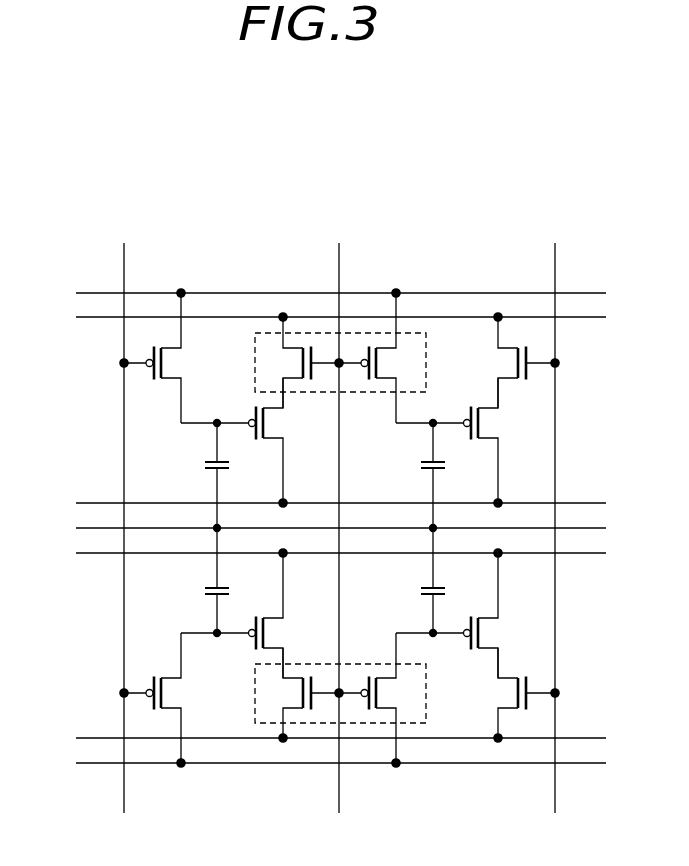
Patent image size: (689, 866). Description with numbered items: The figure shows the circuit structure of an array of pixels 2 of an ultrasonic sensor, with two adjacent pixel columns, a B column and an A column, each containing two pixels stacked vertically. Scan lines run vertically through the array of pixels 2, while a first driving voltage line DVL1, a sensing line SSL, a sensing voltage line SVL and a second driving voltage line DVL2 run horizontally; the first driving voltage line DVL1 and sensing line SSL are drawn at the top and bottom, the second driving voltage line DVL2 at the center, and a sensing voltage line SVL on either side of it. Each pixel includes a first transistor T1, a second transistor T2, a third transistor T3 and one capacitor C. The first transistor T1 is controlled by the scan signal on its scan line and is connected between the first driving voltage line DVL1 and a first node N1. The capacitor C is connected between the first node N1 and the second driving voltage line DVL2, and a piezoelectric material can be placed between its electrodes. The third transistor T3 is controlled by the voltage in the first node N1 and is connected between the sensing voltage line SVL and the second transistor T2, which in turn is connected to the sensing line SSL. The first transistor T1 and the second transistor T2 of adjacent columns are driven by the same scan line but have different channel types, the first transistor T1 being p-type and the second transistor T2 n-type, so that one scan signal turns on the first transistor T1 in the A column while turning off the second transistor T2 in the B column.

The array of pixels 2 is at (193, 160).
The first transistor T1 is at (268, 528).
The second transistor T2 is at (411, 528).
The third transistor T3 is at (386, 528).
The capacitor C is at (333, 528).
The first node N1 is at (322, 527).
The first driving voltage line DVL1 is at (86, 293).
The second driving voltage line DVL2 is at (86, 528).
The sensing line SSL is at (86, 317).
The sensing voltage line SVL is at (86, 503).